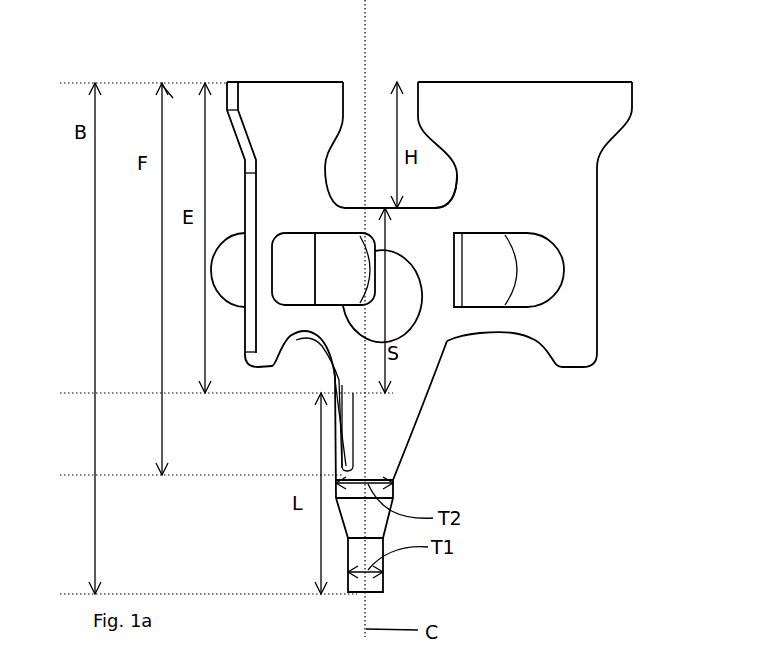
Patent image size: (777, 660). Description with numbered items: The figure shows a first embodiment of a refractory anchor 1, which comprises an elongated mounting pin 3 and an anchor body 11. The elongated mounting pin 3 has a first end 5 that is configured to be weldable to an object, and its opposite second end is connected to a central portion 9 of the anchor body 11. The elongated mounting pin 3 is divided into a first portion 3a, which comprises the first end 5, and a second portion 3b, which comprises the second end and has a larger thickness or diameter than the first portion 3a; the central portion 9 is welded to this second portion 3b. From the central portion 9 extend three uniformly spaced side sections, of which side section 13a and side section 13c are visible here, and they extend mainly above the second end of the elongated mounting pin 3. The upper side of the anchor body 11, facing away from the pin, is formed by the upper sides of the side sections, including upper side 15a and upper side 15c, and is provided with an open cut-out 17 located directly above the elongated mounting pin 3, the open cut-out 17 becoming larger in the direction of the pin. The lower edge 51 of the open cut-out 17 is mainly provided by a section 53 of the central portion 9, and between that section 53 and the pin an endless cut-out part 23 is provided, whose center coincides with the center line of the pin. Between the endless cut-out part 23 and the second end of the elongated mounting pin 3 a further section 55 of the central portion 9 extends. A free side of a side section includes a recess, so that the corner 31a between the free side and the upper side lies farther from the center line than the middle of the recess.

The refractory anchor 1 is at (204, 53).
The elongated mounting pin 3 is at (355, 512).
The first portion of the elongated mounting pin 3a is at (383, 592).
The second portion of the elongated mounting pin 3b is at (377, 448).
The first end 5 is at (358, 594).
The central portion 9 is at (370, 363).
The anchor body 11 is at (662, 223).
The side section 13a is at (570, 155).
The side section 13c is at (268, 107).
The upper side 15a is at (493, 82).
The upper side 15c is at (312, 80).
The open cut-out 17 is at (373, 67).
The endless cut-out part 23 is at (395, 307).
The corner 31a is at (633, 87).
The lower edge 51 is at (355, 205).
The section of the central portion 53 is at (400, 235).
The further section of the central portion 55 is at (387, 368).